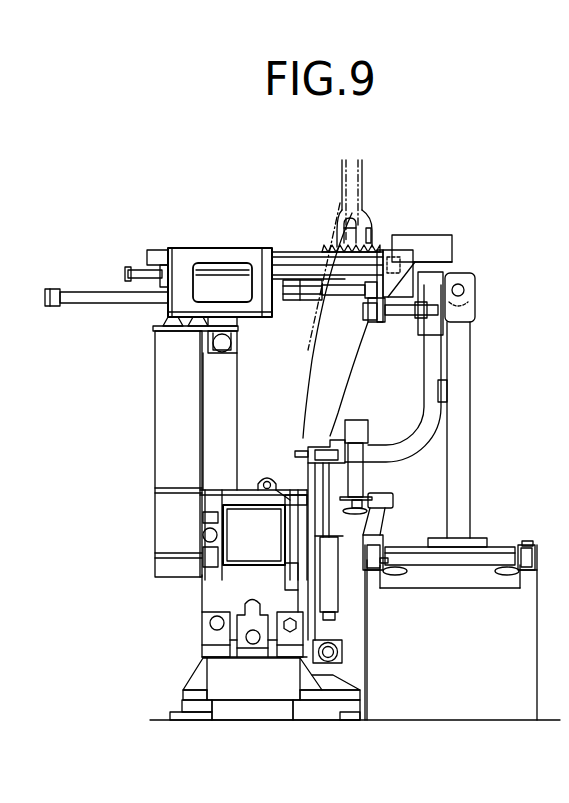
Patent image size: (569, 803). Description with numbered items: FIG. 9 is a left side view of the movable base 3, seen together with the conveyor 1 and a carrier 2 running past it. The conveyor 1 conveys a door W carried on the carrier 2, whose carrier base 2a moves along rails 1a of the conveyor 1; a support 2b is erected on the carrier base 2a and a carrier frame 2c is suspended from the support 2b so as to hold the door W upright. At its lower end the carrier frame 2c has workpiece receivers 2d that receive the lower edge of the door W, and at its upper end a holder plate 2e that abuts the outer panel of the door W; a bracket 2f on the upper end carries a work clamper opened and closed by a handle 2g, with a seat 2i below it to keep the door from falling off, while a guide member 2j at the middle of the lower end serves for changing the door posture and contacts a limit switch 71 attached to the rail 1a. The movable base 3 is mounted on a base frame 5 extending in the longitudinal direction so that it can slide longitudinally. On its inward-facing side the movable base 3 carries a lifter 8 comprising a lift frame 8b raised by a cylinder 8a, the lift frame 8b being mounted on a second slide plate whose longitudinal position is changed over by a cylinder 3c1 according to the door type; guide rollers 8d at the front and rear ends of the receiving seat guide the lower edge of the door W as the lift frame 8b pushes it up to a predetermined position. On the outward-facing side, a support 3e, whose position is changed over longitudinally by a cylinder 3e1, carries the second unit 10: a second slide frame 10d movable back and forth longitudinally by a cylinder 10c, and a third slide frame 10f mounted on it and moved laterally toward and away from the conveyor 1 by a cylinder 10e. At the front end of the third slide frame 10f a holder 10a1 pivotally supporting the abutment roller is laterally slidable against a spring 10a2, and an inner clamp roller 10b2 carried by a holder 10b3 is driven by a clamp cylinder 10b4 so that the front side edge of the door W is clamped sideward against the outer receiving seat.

The conveyor 1 is at (528, 530).
The rails 1a is at (363, 544).
The carrier 2 is at (474, 277).
The carrier base 2a is at (503, 547).
The support 2b is at (463, 426).
The carrier frame 2c is at (432, 358).
The workpiece receivers 2d is at (350, 432).
The holder plate 2e is at (380, 322).
The bracket 2f is at (380, 200).
The handle 2g is at (363, 222).
The seat 2i is at (370, 312).
The guide member 2j is at (358, 485).
The movable base 3 is at (243, 505).
The cylinder 3c1 is at (342, 650).
The support 3e is at (195, 395).
The cylinder 3e1 is at (262, 480).
The base frame 5 is at (254, 694).
The limit switch 71 is at (384, 502).
The lifter 8 is at (296, 440).
The cylinder 8a is at (330, 578).
The lift frame 8b is at (306, 468).
The guide rollers 8d is at (300, 436).
The second unit 10 is at (413, 252).
The holder 10a1 is at (422, 238).
The spring 10a2 is at (335, 247).
The inner clamp roller 10b2 is at (420, 245).
The holder 10b3 is at (440, 252).
The clamp cylinder 10b4 is at (300, 300).
The cylinder 10c is at (222, 352).
The second slide frame 10d is at (257, 318).
The cylinder 10e is at (112, 300).
The third slide frame 10f is at (286, 254).
The door W is at (317, 325).